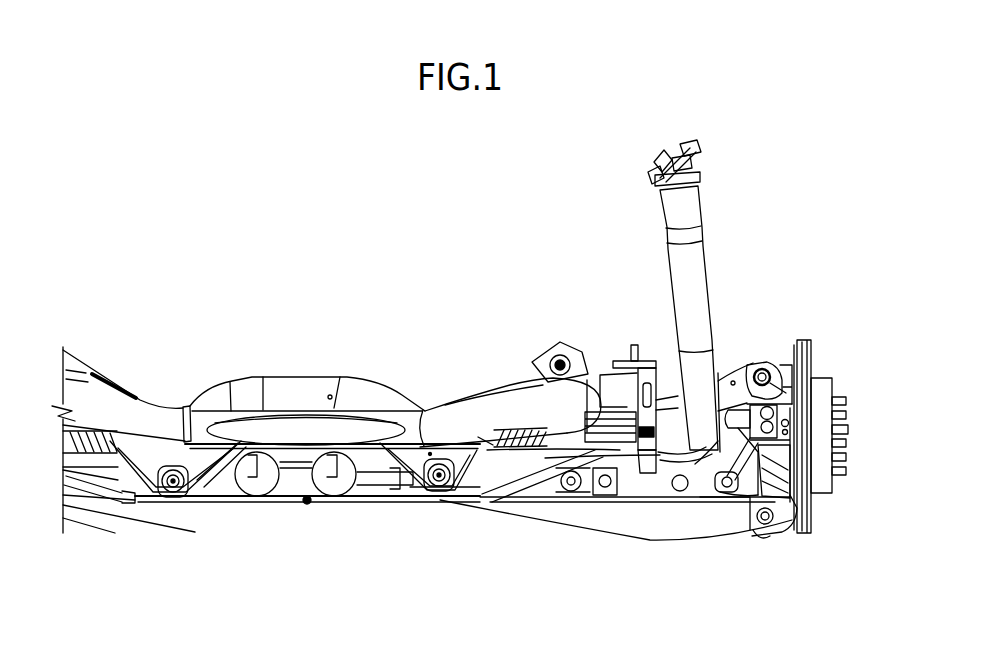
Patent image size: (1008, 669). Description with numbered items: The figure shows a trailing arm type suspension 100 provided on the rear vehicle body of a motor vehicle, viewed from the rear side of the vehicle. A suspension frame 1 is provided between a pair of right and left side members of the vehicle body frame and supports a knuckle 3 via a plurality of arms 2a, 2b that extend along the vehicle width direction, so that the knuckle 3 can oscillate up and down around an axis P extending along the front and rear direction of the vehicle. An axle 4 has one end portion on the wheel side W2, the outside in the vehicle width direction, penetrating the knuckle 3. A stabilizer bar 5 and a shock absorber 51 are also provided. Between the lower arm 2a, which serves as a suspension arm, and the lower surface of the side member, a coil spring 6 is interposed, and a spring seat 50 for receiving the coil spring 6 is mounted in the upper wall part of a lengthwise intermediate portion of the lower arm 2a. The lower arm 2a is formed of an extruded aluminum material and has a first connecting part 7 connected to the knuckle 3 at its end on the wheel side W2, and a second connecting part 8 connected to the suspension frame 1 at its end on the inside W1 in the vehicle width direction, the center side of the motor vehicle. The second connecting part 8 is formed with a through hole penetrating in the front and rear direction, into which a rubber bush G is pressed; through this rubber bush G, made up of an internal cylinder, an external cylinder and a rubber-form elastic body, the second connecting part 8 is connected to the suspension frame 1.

The trailing arm type suspension 100 is at (274, 226).
The inside in the vehicle width direction W1 is at (603, 208).
The wheel side W2 is at (596, 177).
The suspension frame 1 is at (453, 410).
The axis P is at (430, 452).
The axle 4 is at (95, 458).
The stabilizer bar 5 is at (405, 502).
The rubber bush G is at (437, 493).
The second connecting part 8 is at (470, 489).
The lower arm 2a is at (538, 512).
The arm 2b is at (719, 374).
The spring seat 50 is at (607, 502).
The coil spring 6 is at (633, 500).
The shock absorber 51 is at (700, 284).
The knuckle 3 is at (782, 350).
The first connecting part 7 is at (740, 525).